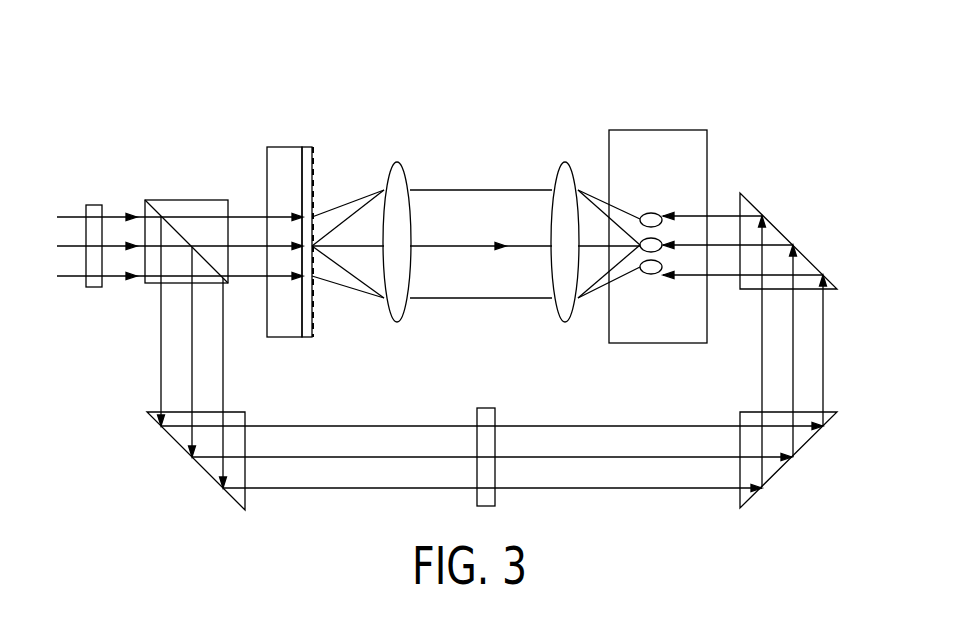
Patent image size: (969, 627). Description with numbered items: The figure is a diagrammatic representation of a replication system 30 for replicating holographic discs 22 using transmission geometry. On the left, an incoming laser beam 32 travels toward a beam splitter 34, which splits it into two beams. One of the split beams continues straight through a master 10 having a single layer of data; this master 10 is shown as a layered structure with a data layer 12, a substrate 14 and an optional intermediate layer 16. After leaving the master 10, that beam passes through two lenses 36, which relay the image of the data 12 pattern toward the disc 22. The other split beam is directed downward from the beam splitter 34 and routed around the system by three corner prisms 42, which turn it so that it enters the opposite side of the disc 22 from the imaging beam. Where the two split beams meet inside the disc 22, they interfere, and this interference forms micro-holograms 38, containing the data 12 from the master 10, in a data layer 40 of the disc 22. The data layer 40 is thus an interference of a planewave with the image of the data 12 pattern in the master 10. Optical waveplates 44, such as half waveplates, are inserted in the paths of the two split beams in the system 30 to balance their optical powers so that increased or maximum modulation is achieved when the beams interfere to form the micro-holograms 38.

The master 10 is at (289, 254).
The data layer 12 is at (312, 328).
The substrate 14 is at (280, 337).
The intermediate layer 16 is at (306, 147).
The holographic disc 22 is at (687, 176).
The replication system 30 is at (707, 33).
The incoming laser beam 32 is at (67, 276).
The beam splitter 34 is at (172, 200).
The lenses 36 is at (397, 322).
The micro-holograms 38 is at (648, 275).
The data layer 40 is at (653, 204).
The corner prisms 42 is at (808, 262).
The wave plate 44 is at (93, 204).